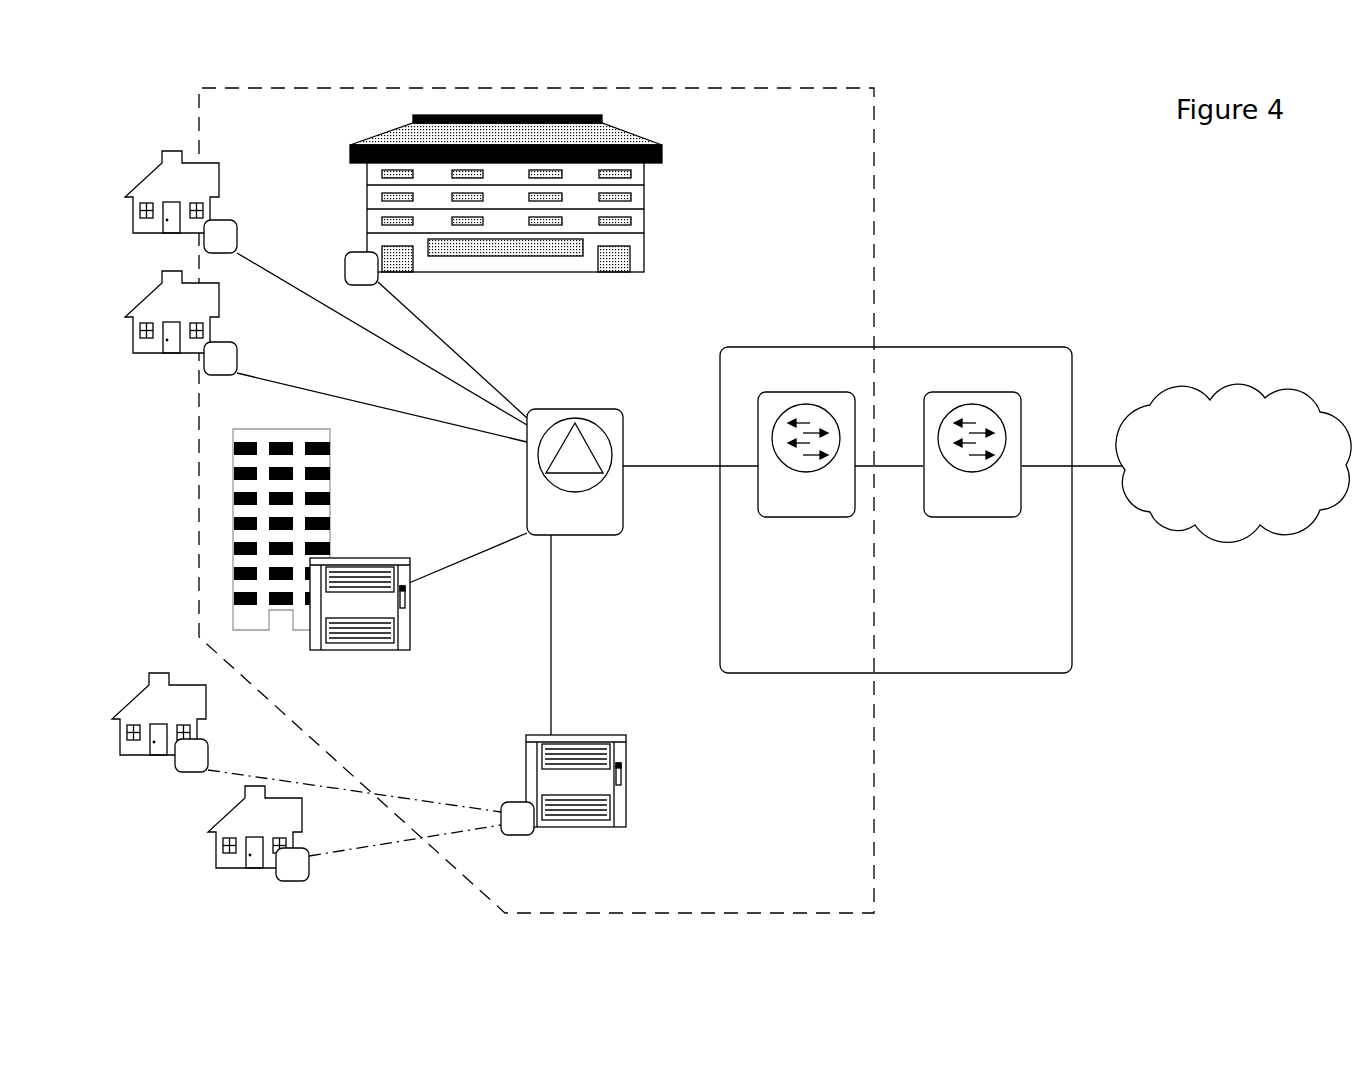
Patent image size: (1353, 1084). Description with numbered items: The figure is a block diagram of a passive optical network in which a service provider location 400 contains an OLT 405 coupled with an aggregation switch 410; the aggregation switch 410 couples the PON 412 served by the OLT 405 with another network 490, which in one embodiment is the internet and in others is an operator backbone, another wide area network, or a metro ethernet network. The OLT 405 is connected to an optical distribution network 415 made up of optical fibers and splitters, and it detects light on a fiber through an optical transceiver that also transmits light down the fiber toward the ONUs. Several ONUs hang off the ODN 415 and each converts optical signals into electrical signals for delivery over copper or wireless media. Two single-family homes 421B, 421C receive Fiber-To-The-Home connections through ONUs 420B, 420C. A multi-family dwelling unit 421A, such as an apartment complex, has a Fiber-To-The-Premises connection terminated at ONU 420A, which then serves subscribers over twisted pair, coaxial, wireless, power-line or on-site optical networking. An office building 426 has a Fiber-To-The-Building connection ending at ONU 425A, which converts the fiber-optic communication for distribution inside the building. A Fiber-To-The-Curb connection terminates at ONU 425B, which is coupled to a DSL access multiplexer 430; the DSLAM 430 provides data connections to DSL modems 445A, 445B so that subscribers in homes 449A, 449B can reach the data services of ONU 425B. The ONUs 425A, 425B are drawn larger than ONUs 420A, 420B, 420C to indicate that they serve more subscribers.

The service provider location 400 is at (896, 510).
The OLT 405 is at (806, 475).
The aggregation switch 410 is at (976, 483).
The PON 412 is at (910, 155).
The optical distribution network 415 is at (575, 472).
The ONU 420A is at (358, 252).
The ONU 420B is at (237, 221).
The ONU 420C is at (213, 375).
The multi-family dwelling unit 421A is at (645, 199).
The home 421B is at (125, 183).
The home 421C is at (125, 300).
The ONU 425A is at (360, 616).
The ONU 425B is at (587, 793).
The office building 426 is at (233, 547).
The DSL access multiplexer 430 is at (516, 835).
The DSL modem 445A is at (295, 883).
The DSL modem 445B is at (193, 773).
The house 449A is at (217, 868).
The house 449B is at (148, 680).
The network 490 is at (1233, 463).